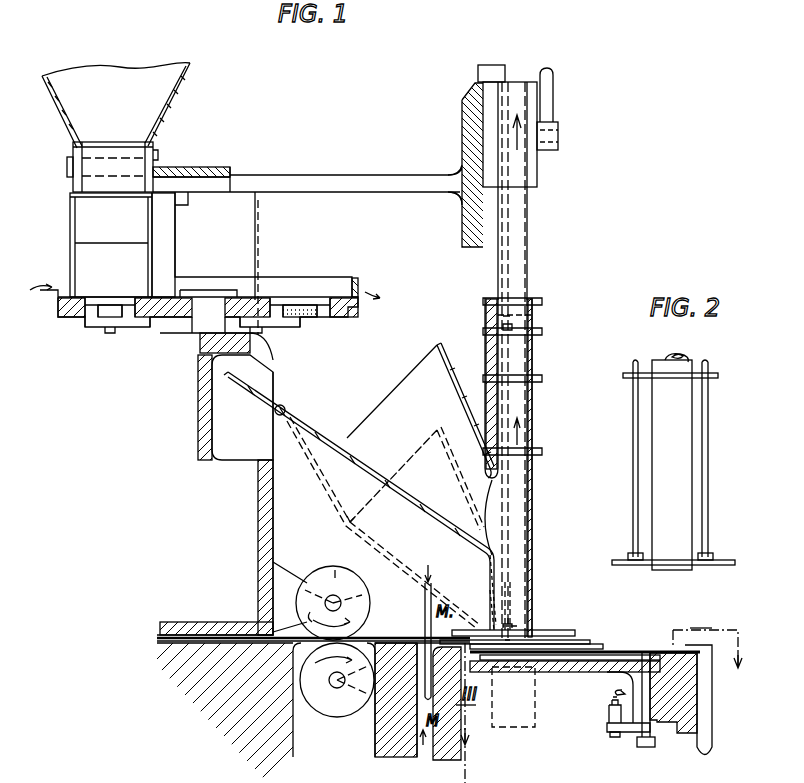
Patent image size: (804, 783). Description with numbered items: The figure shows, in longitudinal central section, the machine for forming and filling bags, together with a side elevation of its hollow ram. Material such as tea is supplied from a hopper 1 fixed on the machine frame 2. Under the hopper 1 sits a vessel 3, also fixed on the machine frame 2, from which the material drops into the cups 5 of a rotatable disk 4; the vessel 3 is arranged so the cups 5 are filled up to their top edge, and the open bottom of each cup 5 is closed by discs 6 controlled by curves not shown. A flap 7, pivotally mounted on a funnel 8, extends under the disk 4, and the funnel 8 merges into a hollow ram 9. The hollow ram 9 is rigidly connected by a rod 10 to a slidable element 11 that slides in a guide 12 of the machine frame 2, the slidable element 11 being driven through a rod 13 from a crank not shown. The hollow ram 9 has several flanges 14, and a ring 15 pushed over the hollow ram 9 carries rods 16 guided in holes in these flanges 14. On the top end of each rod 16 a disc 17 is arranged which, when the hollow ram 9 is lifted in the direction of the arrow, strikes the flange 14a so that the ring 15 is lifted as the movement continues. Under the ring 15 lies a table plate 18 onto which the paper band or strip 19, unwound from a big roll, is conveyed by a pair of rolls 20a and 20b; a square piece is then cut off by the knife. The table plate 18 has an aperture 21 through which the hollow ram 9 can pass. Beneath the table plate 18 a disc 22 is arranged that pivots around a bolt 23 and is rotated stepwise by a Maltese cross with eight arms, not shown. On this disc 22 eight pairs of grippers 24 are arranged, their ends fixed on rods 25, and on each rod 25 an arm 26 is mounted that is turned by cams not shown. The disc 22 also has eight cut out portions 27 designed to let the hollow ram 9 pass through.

In FIG. 1, the hopper 1 is at (150, 108).
In FIG. 1, the machine frame 2 is at (222, 180).
In FIG. 1, the vessel 3 is at (150, 213).
In FIG. 1, the rotatable disk 4 is at (255, 305).
In FIG. 1, the cups 5 is at (113, 320).
In FIG. 1, the discs 6 is at (100, 325).
In FIG. 1, the flap 7 is at (334, 435).
In FIG. 1, the funnel 8 is at (432, 495).
In FIG. 1, the hollow ram 9 is at (530, 435).
In FIG. 2, the hollow ram 9 is at (672, 462).
In FIG. 1, the rod 10 is at (520, 265).
In FIG. 1, the slidable element 11 is at (527, 128).
In FIG. 1, the guide 12 is at (492, 240).
In FIG. 1, the rod 13 is at (545, 120).
In FIG. 1, the flanges 14 is at (540, 452).
In FIG. 2, the flanges 14 is at (715, 378).
In FIG. 1, the flange 14a is at (542, 332).
In FIG. 1, the ring 15 is at (550, 632).
In FIG. 2, the ring 15 is at (718, 566).
In FIG. 1, the rods 16 is at (512, 557).
In FIG. 2, the rods 16 is at (633, 498).
In FIG. 1, the disc 17 is at (515, 325).
In FIG. 1, the table plate 18 is at (600, 645).
In FIG. 1, the paper band or strip 19 is at (380, 628).
In FIG. 1, the roll 20a is at (355, 594).
In FIG. 1, the roll 20b is at (320, 705).
In FIG. 1, the aperture 21 is at (490, 632).
In FIG. 1, the disc 22 is at (622, 675).
In FIG. 1, the bolt 23 is at (705, 752).
In FIG. 1, the pairs of grippers 24 is at (572, 672).
In FIG. 1, the rods 25 is at (652, 742).
In FIG. 1, the arm 26 is at (622, 737).
In FIG. 1, the cut out portions 27 is at (520, 663).